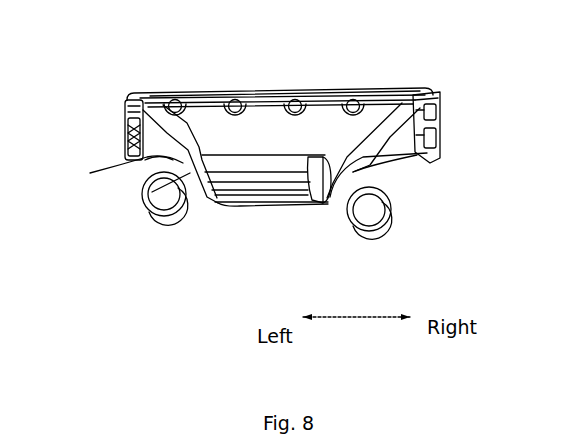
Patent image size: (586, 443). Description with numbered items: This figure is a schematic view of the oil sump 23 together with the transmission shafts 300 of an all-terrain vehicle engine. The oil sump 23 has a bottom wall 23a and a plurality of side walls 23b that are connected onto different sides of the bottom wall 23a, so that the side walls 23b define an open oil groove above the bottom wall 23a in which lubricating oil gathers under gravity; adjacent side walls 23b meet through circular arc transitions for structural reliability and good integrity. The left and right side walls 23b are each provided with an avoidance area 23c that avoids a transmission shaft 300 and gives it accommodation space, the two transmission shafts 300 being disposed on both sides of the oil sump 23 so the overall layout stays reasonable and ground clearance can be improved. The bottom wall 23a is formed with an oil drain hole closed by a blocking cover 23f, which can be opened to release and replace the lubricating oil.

The oil sump 23 is at (380, 62).
The bottom wall 23a is at (252, 202).
The side walls 23b is at (268, 132).
The avoidance area 23c is at (145, 200).
The blocking cover 23f is at (282, 203).
The transmission shaft 300 is at (160, 223).